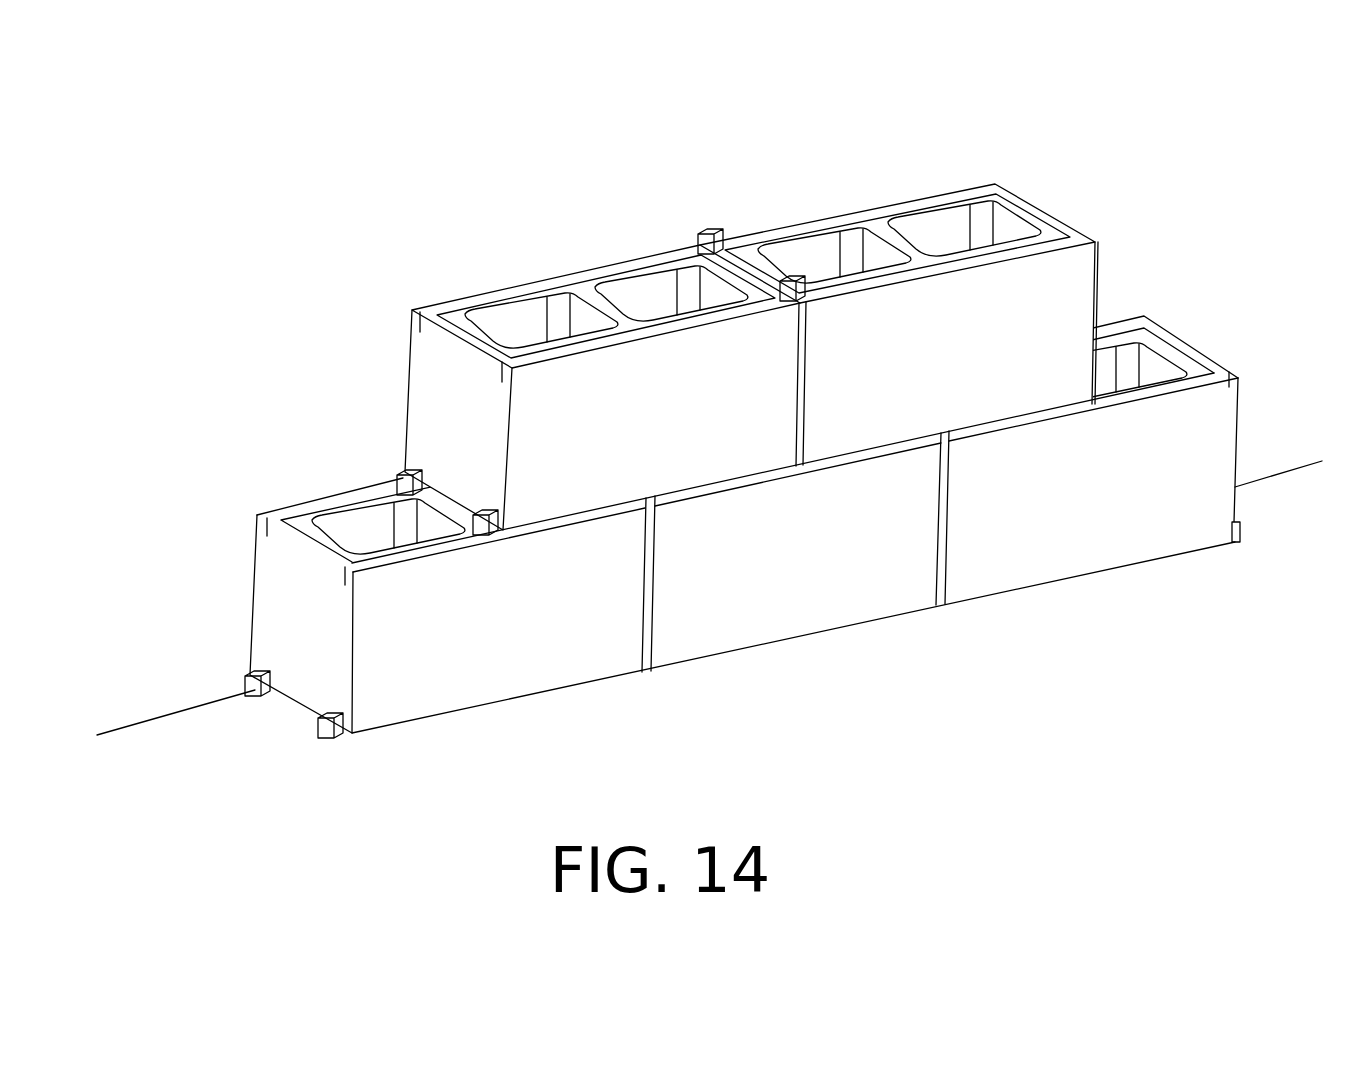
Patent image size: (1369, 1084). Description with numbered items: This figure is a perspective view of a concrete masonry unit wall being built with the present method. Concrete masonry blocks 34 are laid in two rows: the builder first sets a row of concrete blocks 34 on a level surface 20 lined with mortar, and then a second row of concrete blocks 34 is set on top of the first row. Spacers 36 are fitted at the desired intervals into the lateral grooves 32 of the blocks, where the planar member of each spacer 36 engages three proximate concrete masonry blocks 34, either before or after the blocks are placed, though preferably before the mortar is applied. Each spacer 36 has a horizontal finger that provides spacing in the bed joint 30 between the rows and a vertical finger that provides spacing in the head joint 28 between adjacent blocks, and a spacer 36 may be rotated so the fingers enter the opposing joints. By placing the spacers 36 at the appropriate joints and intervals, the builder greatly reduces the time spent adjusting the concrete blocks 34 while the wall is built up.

The level surface 20 is at (232, 742).
The head joint 28 is at (652, 607).
The bed joint 30 is at (280, 515).
The lateral grooves 32 is at (458, 307).
The concrete masonry blocks 34 is at (645, 407).
The spacer 36 is at (713, 245).